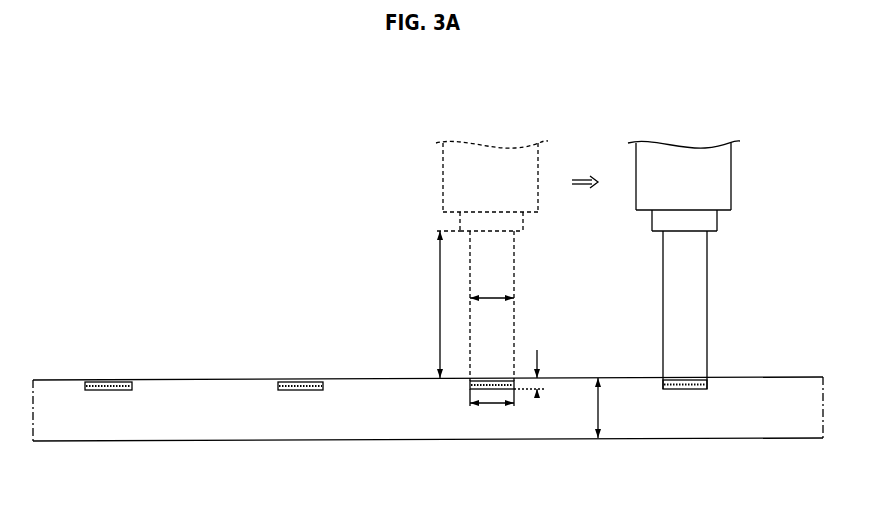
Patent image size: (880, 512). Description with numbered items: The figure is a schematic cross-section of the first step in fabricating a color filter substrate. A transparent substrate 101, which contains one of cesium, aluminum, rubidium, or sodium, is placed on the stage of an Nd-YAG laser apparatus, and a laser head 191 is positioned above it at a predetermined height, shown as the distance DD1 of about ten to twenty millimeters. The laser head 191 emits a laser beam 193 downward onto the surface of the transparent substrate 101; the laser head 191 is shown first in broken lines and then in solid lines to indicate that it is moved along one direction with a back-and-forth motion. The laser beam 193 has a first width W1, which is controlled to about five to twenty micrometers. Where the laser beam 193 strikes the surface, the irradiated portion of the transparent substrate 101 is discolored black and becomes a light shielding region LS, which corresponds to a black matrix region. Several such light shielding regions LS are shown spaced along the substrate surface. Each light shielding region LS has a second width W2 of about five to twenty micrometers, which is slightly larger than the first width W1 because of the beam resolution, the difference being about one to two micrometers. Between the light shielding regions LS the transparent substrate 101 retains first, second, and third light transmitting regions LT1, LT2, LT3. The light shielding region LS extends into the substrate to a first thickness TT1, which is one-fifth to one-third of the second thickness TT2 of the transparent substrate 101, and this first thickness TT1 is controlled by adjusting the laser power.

The transparent substrate 101 is at (806, 418).
The laser head 191 is at (512, 158).
The laser beam 193 is at (510, 265).
The light shielding region LS is at (110, 394).
The first light transmitting region LT1 is at (173, 362).
The second light transmitting region LT2 is at (378, 362).
The third light transmitting region LT3 is at (601, 362).
The distance DD1 is at (431, 304).
The first width W1 is at (492, 287).
The second width W2 is at (492, 408).
The first thickness TT1 is at (542, 372).
The second thickness TT2 is at (616, 408).